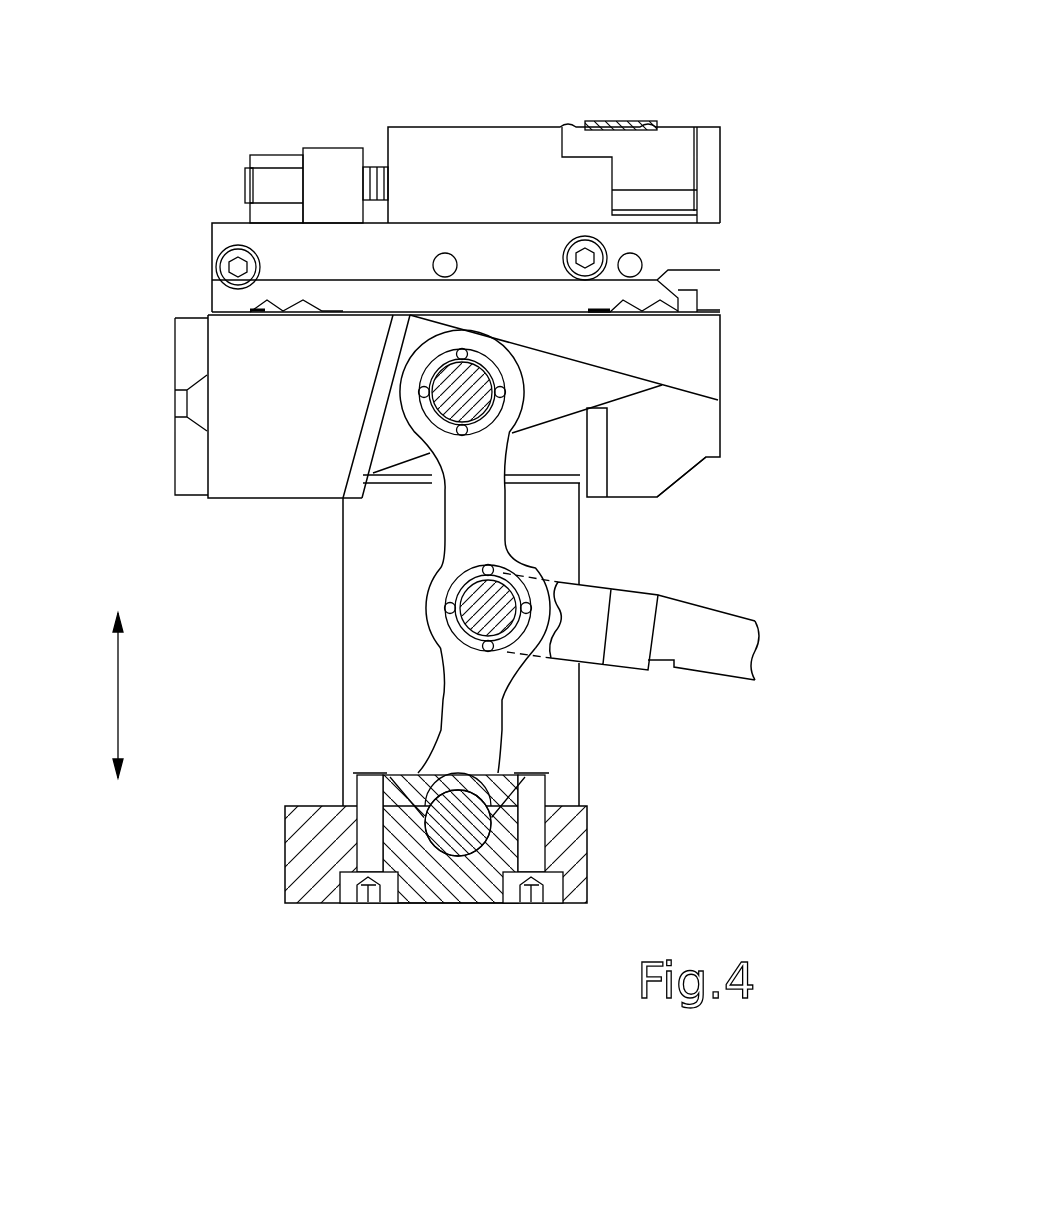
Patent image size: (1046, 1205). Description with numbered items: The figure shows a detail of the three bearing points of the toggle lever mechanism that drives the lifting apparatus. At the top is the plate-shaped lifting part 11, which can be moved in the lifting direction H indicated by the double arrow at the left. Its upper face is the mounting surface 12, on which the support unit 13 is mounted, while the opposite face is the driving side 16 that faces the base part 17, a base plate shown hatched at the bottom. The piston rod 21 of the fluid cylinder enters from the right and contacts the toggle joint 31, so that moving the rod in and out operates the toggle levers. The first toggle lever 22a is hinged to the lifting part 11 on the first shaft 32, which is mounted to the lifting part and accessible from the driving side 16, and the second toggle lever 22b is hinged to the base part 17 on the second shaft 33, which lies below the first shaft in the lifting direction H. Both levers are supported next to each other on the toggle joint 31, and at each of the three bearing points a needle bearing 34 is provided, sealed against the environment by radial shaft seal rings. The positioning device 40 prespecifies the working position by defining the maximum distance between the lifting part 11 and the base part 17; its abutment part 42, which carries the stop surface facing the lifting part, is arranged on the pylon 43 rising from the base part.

The lifting part 11 is at (720, 357).
The mounting surface 12 is at (218, 309).
The support unit 13 is at (746, 159).
The driving side 16 is at (657, 498).
The base part 17 is at (440, 890).
The piston rod 21 is at (739, 660).
The first toggle lever 22a is at (455, 500).
The second toggle lever 22b is at (465, 727).
The toggle joint 31 is at (472, 605).
The first shaft 32 is at (458, 388).
The second shaft 33 is at (458, 835).
The needle bearing 34 is at (490, 372).
The positioning device 40 is at (512, 268).
The abutment part 42 is at (562, 440).
The pylon 43 is at (569, 747).
The lifting direction H is at (118, 706).